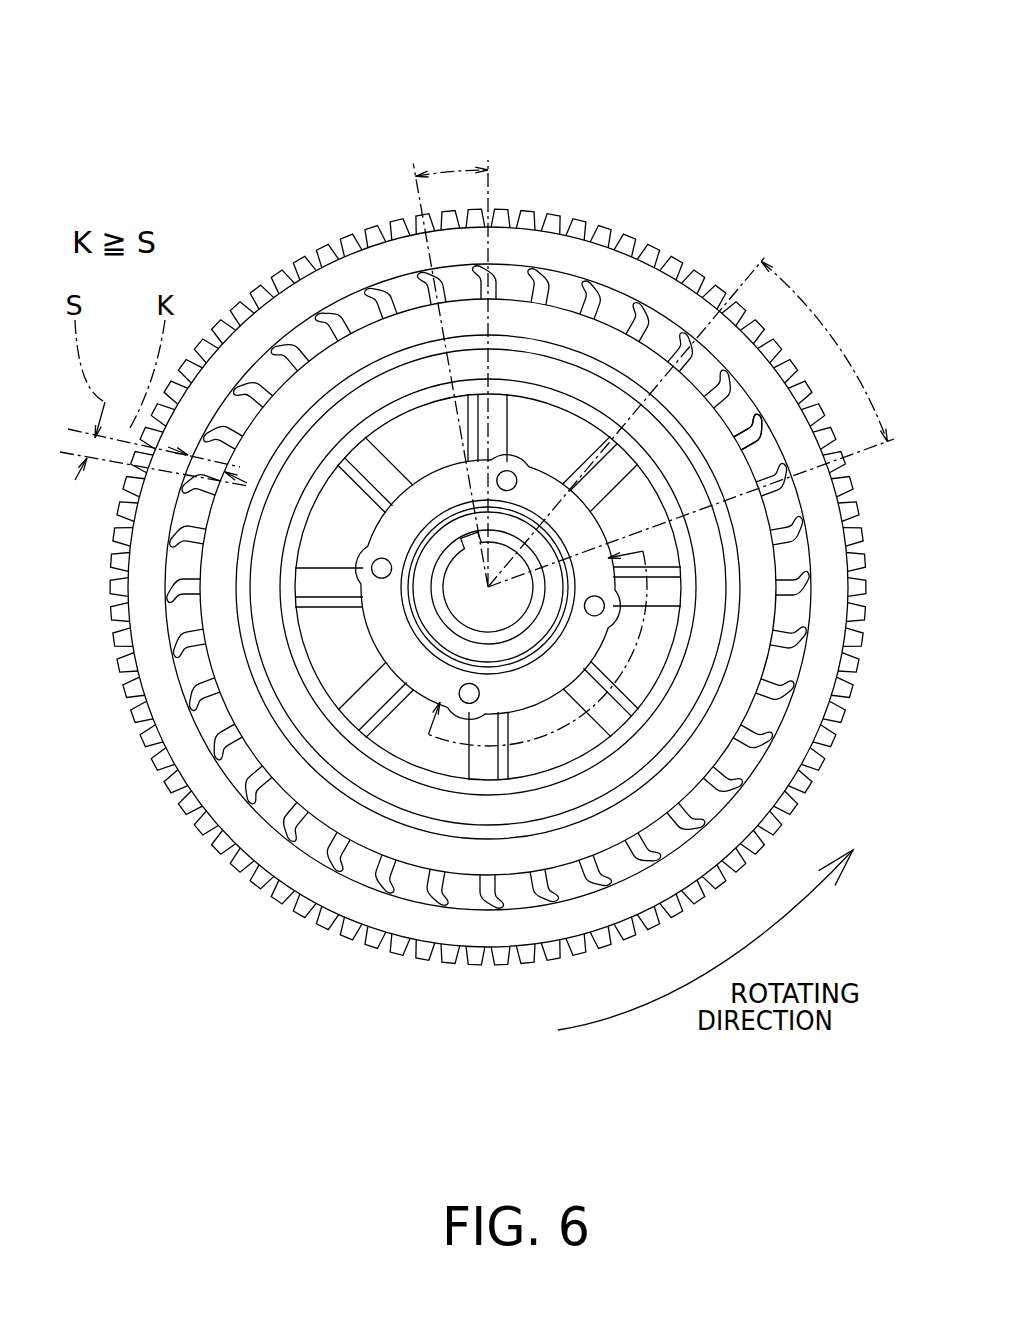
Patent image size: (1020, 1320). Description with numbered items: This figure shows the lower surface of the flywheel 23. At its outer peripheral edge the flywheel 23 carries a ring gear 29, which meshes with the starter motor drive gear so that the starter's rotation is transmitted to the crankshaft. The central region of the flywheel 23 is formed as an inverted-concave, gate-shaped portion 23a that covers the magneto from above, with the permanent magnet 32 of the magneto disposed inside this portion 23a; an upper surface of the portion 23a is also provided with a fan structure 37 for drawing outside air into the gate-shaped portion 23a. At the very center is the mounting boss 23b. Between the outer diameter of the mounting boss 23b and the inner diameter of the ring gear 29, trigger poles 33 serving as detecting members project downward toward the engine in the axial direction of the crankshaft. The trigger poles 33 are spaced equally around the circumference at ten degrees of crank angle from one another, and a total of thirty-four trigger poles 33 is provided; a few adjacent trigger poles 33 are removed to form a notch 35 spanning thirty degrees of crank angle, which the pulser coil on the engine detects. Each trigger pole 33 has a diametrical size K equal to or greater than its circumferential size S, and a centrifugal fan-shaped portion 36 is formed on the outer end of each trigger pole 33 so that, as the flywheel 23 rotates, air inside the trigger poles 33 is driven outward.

The flywheel 23 is at (643, 130).
The inverted-concave portion 23a is at (343, 763).
The mounting boss 23b is at (385, 622).
The ring gear 29 is at (318, 287).
The permanent magnet 32 is at (290, 748).
The trigger poles 33 is at (598, 305).
The notch 35 is at (750, 423).
The centrifugal fan-shaped portion 36 is at (587, 292).
The fan structure 37 is at (650, 668).